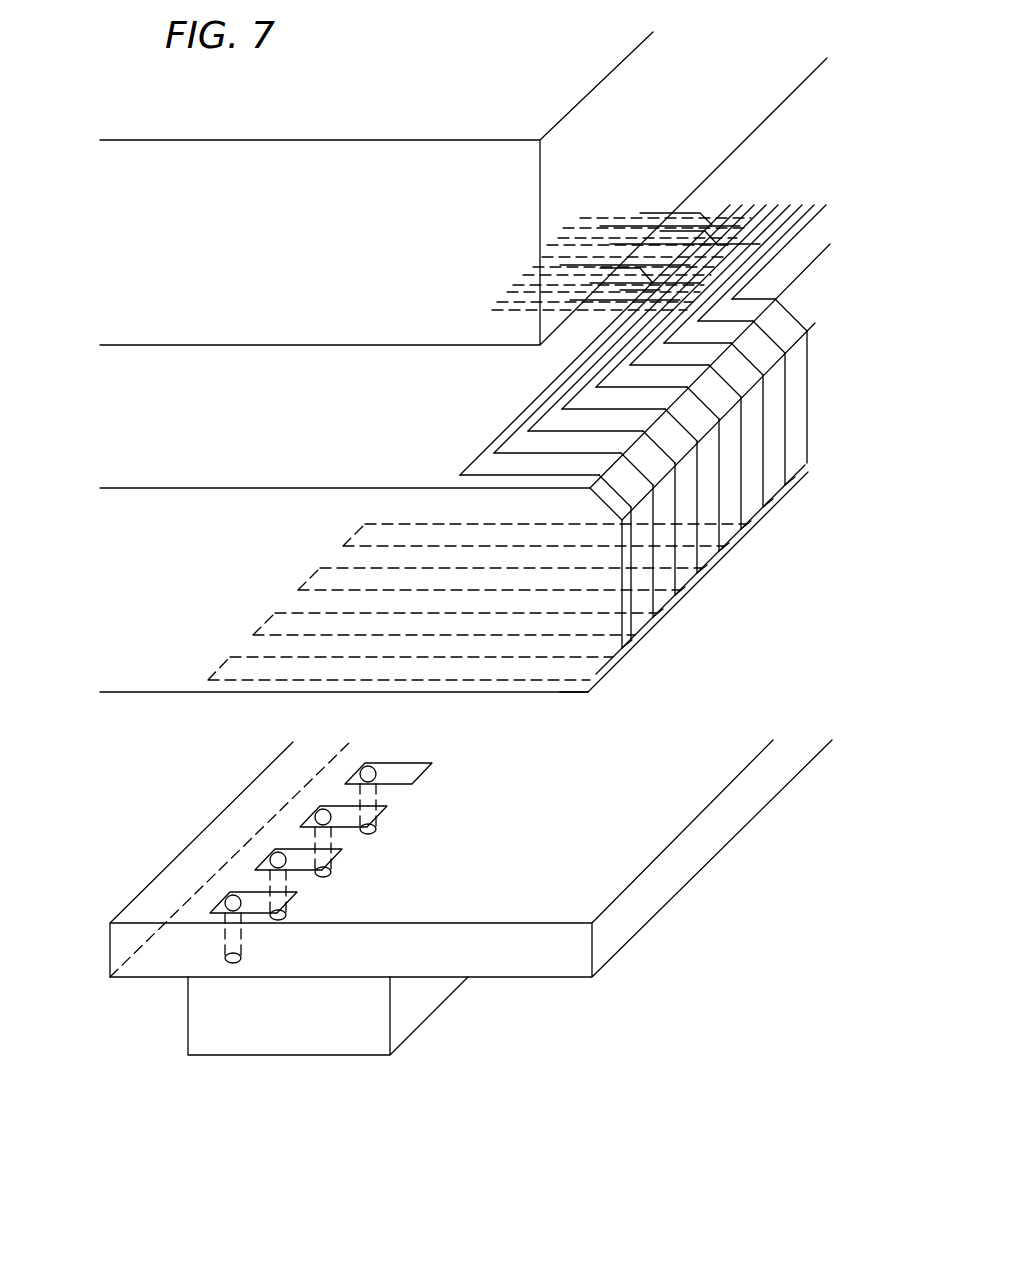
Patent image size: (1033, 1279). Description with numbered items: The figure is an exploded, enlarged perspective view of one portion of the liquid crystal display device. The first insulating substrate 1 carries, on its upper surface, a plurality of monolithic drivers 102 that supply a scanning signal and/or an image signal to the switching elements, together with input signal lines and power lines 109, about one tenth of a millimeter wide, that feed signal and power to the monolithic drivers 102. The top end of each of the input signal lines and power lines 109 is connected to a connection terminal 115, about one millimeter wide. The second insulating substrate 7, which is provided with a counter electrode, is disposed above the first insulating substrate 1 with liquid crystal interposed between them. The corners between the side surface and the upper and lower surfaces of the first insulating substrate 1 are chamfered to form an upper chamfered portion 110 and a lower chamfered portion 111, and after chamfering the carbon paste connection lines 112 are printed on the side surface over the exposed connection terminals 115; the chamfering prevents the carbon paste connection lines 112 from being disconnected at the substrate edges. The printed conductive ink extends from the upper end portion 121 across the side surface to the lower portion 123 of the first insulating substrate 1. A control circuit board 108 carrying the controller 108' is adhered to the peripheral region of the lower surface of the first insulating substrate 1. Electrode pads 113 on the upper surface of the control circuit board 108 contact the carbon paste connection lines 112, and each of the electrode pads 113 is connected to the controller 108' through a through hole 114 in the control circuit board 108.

The second insulating substrate 7 is at (150, 238).
The first insulating substrate 1 is at (150, 600).
The monolithic drivers 102 is at (620, 217).
The input signal lines and power lines 109 is at (690, 314).
The upper chamfered portion 110 is at (790, 321).
The lower chamfered portion 111 is at (793, 488).
The carbon paste connection lines 112 is at (777, 430).
The connection terminal 115 is at (483, 467).
The upper end portion 121 is at (592, 463).
The lower portion 123 is at (531, 668).
The control circuit board 108 is at (471, 858).
The controller 108' is at (328, 1041).
The electrode pads 113 is at (367, 765).
The through hole 114 is at (242, 940).